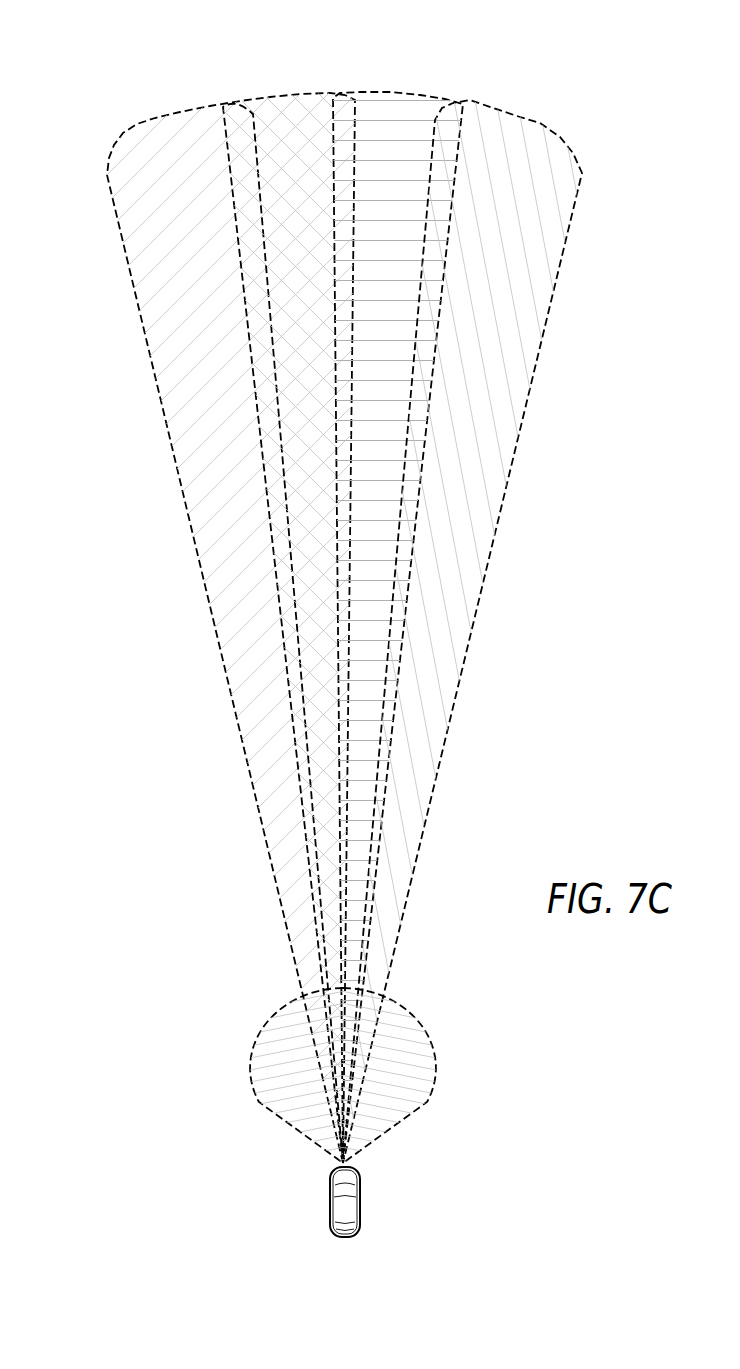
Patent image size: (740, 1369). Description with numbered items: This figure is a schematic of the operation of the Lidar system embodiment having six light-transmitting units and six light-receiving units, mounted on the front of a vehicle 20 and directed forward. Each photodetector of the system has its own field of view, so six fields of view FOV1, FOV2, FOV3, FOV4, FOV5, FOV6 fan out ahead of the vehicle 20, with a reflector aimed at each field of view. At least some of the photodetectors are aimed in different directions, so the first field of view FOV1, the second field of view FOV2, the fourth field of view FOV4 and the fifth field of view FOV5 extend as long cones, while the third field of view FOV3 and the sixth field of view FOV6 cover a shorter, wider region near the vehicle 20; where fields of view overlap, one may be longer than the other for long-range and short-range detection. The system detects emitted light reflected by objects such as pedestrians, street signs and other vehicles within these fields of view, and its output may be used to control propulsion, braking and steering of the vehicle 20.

The first field of view FOV1 is at (150, 120).
The second field of view FOV2 is at (293, 92).
The third field of view FOV3 is at (265, 1103).
The fourth field of view FOV4 is at (395, 92).
The fifth field of view FOV5 is at (533, 120).
The sixth field of view FOV6 is at (423, 1102).
The vehicle 20 is at (330, 1210).